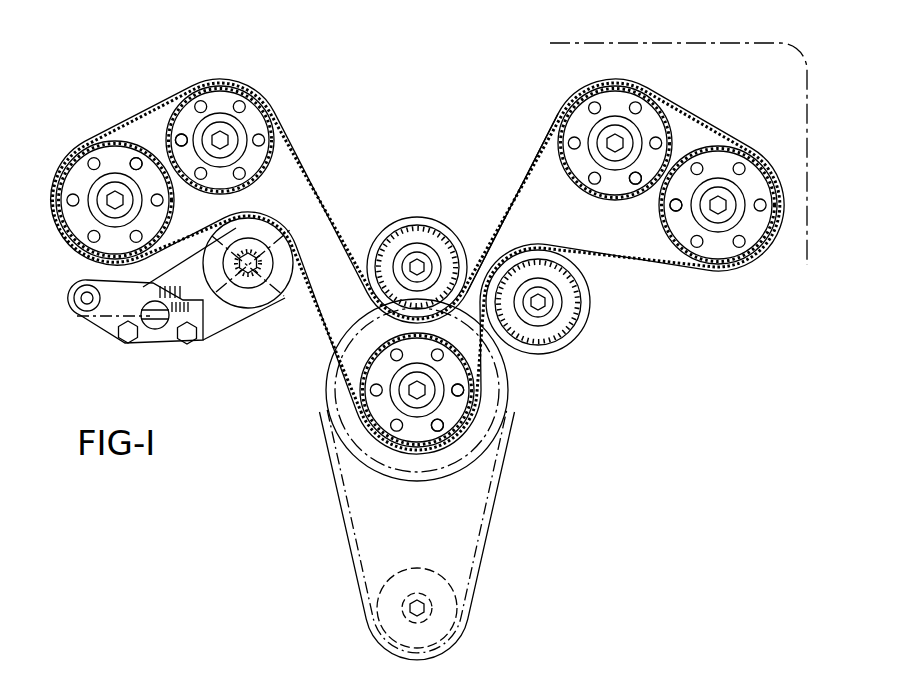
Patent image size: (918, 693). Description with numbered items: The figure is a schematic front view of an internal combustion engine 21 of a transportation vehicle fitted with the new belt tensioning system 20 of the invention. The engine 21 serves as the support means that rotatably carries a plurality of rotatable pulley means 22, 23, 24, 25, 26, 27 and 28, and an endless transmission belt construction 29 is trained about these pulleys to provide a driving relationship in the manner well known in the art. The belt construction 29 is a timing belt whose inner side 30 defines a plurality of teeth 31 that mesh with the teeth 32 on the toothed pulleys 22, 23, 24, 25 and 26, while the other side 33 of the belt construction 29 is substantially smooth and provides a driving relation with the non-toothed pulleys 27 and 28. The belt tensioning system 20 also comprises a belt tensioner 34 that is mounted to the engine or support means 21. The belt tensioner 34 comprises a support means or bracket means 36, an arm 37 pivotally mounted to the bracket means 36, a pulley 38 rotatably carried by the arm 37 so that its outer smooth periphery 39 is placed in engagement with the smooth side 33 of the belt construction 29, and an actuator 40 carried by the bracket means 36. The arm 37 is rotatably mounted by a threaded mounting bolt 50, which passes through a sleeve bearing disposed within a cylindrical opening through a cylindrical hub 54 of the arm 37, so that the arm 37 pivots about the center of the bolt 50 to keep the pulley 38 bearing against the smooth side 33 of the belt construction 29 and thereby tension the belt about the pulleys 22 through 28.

The belt tensioning system 20 is at (278, 414).
The internal combustion engine 21 is at (673, 43).
The pulley means 22 is at (92, 142).
The pulley means 23 is at (222, 86).
The pulley means 24 is at (578, 118).
The pulley means 25 is at (741, 150).
The pulley means 26 is at (458, 383).
The non-toothed pulley 27 is at (417, 218).
The non-toothed pulley 28 is at (578, 292).
The endless transmission belt construction 29 is at (330, 183).
The inner side 30 is at (331, 211).
The teeth 31 is at (300, 165).
The teeth 32 is at (168, 126).
The other side 33 is at (507, 200).
The belt tensioner 34 is at (175, 353).
The support means or bracket means 36 is at (105, 343).
The arm 37 is at (240, 318).
The pulley 38 is at (262, 320).
The outer smooth periphery 39 is at (290, 312).
The actuator 40 is at (150, 334).
The mounting bolt 50 is at (226, 240).
The cylindrical hub 54 is at (280, 237).